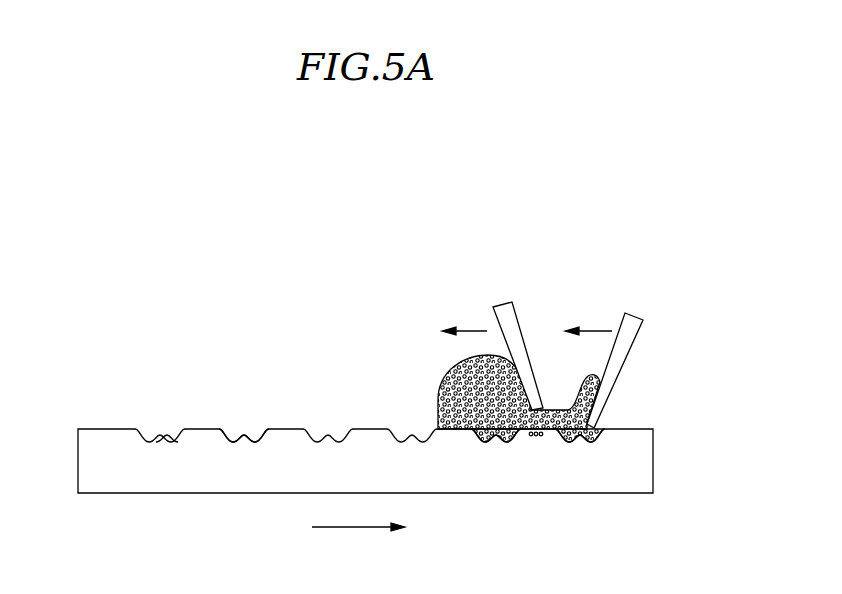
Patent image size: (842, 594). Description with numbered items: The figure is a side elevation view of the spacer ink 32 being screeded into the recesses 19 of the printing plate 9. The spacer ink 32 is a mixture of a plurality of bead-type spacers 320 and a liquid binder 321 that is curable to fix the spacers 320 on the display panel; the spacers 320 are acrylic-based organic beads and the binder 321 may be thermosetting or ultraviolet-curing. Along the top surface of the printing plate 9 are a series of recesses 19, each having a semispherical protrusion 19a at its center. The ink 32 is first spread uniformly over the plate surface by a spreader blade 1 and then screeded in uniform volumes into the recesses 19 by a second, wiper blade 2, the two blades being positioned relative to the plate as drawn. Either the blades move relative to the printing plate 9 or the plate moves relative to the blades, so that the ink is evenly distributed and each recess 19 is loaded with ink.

The spreader blade 1 is at (508, 323).
The wiper blade 2 is at (630, 335).
The printing plate 9 is at (638, 461).
The recess 19 is at (226, 431).
The semispherical protrusion 19a is at (163, 433).
The spacer ink 32 is at (468, 382).
The bead-type spacer 320 is at (441, 377).
The liquid binder 321 is at (438, 400).